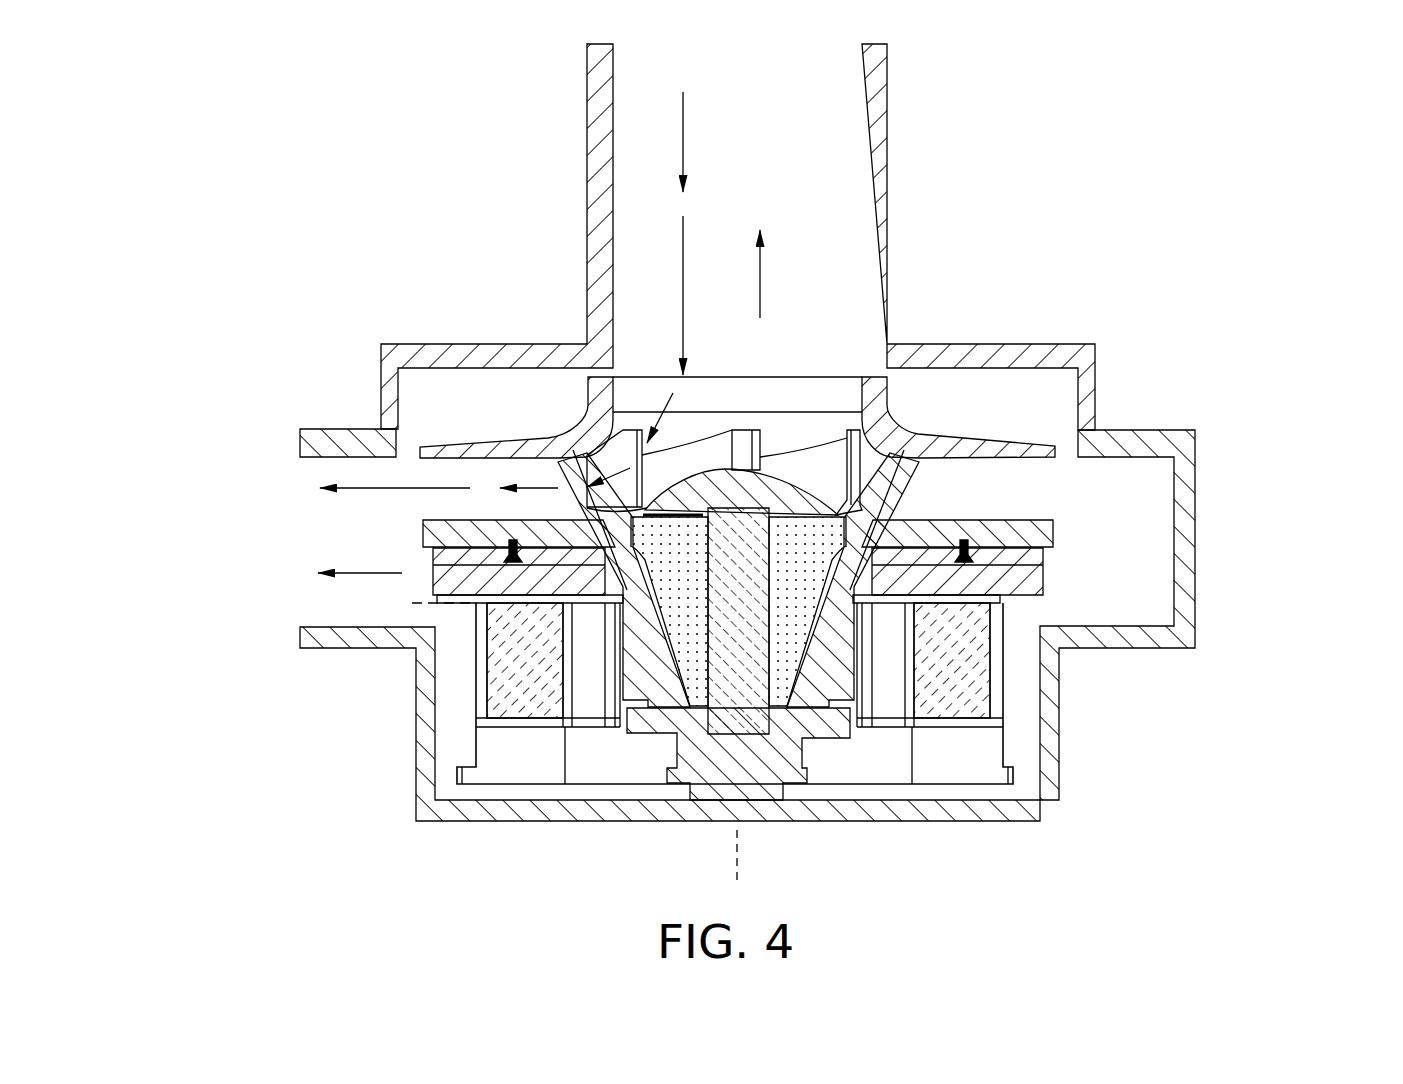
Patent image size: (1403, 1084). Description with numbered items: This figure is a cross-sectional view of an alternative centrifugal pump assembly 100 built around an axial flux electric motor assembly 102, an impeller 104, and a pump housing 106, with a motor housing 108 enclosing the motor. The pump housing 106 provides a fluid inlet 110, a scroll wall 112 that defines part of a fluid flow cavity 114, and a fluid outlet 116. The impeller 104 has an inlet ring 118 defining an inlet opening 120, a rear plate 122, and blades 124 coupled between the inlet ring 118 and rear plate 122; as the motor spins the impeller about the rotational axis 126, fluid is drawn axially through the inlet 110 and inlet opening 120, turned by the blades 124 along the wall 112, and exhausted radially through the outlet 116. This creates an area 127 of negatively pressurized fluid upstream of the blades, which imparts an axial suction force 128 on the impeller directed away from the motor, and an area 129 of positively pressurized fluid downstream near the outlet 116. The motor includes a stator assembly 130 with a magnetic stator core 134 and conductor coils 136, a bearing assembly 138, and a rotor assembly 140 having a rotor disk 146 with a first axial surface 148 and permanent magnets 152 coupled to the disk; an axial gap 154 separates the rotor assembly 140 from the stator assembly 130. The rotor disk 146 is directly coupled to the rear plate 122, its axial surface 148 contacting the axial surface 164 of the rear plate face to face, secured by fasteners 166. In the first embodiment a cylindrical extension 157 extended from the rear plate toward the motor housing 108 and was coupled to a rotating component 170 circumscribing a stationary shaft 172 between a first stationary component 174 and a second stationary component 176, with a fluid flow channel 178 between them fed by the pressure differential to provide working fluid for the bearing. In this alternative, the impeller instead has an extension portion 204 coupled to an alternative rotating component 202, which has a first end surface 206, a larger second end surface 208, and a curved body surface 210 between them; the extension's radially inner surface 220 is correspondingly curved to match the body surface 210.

The centrifugal pump assembly 100 is at (450, 250).
The electric motor assembly 102 is at (1007, 670).
The impeller 104 is at (1021, 445).
The pump housing 106 is at (1007, 354).
The motor housing 108 is at (1030, 818).
The fluid inlet 110 is at (813, 306).
The scroll wall 112 is at (1190, 533).
The fluid flow cavity 114 is at (1143, 487).
The fluid outlet 116 is at (285, 505).
The inlet ring 118 is at (877, 395).
The inlet opening 120 is at (823, 410).
The rear plate 122 is at (1050, 540).
The blades 124 is at (842, 468).
The rotational axis 126 is at (737, 870).
The area of negatively pressurized fluid 127 is at (685, 320).
The axial suction force 128 is at (768, 298).
The area of positively pressurized fluid 129 is at (312, 600).
The stator assembly 130 is at (1022, 737).
The magnetic stator core 134 is at (483, 773).
The conductor coils 136 is at (500, 697).
The bearing assembly 138 is at (821, 749).
The rotor assembly 140 is at (1286, 553).
The rotor disk 146 is at (1043, 555).
The first axial surface 148 is at (1013, 547).
The permanent magnets 152 is at (1043, 583).
The axial gap 154 is at (1007, 603).
The cylindrical extension 157 is at (835, 700).
The axial surface of rear plate 164 is at (983, 540).
The fasteners 166 is at (957, 537).
The rotating component 170 is at (664, 690).
The stationary shaft 172 is at (717, 733).
The first stationary component 174 is at (730, 740).
The second stationary component 176 is at (733, 475).
The fluid flow channel 178 is at (453, 603).
The alternative rotating component 202 is at (785, 677).
The alternative extension portion 204 is at (850, 600).
The first end surface 206 is at (770, 690).
The second end surface 208 is at (800, 505).
The body surface 210 is at (993, 640).
The radially inner surface 220 is at (830, 640).